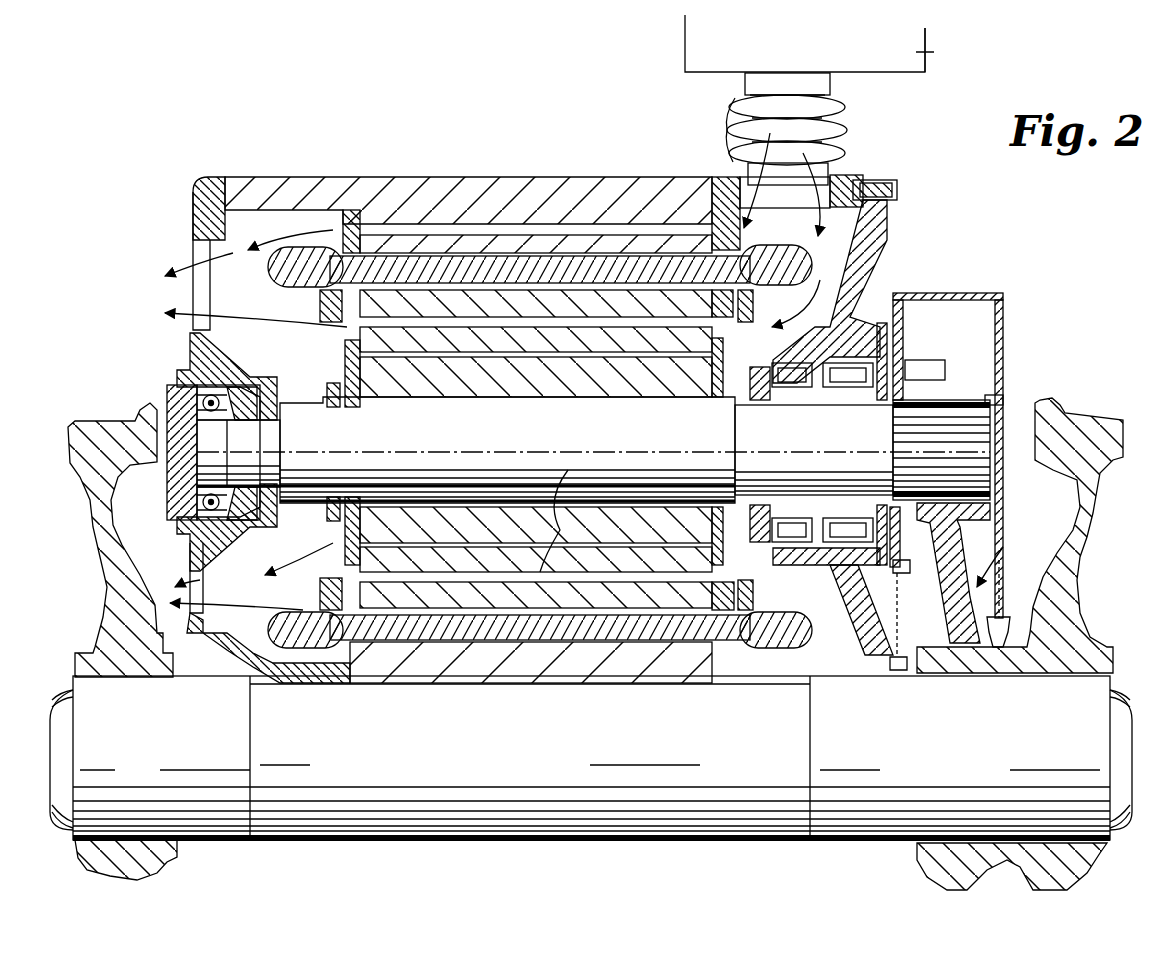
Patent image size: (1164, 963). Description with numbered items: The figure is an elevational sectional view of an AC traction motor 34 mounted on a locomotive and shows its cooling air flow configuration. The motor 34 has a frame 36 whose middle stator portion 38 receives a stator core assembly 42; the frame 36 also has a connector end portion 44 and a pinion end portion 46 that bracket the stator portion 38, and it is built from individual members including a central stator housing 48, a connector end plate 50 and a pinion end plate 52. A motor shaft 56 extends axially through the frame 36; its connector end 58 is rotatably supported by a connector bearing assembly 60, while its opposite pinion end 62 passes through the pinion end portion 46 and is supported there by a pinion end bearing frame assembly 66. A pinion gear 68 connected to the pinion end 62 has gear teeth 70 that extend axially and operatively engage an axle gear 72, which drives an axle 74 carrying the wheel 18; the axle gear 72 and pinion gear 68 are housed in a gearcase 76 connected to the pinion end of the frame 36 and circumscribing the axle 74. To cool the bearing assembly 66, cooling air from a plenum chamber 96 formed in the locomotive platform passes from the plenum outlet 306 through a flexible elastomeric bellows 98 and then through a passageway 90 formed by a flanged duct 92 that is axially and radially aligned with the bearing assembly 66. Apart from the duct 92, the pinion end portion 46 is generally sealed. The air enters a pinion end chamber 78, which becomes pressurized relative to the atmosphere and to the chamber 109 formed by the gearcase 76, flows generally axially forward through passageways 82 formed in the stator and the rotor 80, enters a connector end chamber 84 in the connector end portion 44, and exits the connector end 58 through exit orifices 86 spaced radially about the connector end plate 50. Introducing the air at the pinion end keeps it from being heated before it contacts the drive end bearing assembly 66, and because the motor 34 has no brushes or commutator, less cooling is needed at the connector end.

The wheel 18 is at (1078, 512).
The AC traction motor 34 is at (498, 403).
The frame 36 is at (306, 177).
The stator portion 38 is at (650, 177).
The stator core assembly 42 is at (420, 180).
The connector end portion 44 is at (190, 212).
The pinion end portion 46 is at (878, 182).
The central stator housing 48 is at (606, 177).
The connector end plate 50 is at (190, 331).
The pinion end plate 52 is at (872, 265).
The motor shaft 56 is at (495, 470).
The connector end 58 is at (308, 396).
The connector bearing assembly 60 is at (168, 495).
The pinion end 62 is at (972, 398).
The pinion end bearing frame assembly 66 is at (778, 538).
The pinion gear 68 is at (1004, 400).
The gear teeth 70 is at (1000, 428).
The axle gear 72 is at (1008, 596).
The axle 74 is at (912, 762).
The gearcase 76 is at (1004, 533).
The pinion end chamber 78 is at (760, 242).
The rotor 80 is at (592, 395).
The passageways 82 is at (562, 513).
The connector end chamber 84 is at (230, 236).
The exit orifices 86 is at (200, 258).
The passageway 90 is at (835, 118).
The flanged duct 92 is at (860, 172).
The plenum chamber 96 is at (941, 50).
The flexible elastomeric bellows 98 is at (726, 118).
The chamber 109 is at (905, 616).
The outlet 306 is at (778, 85).